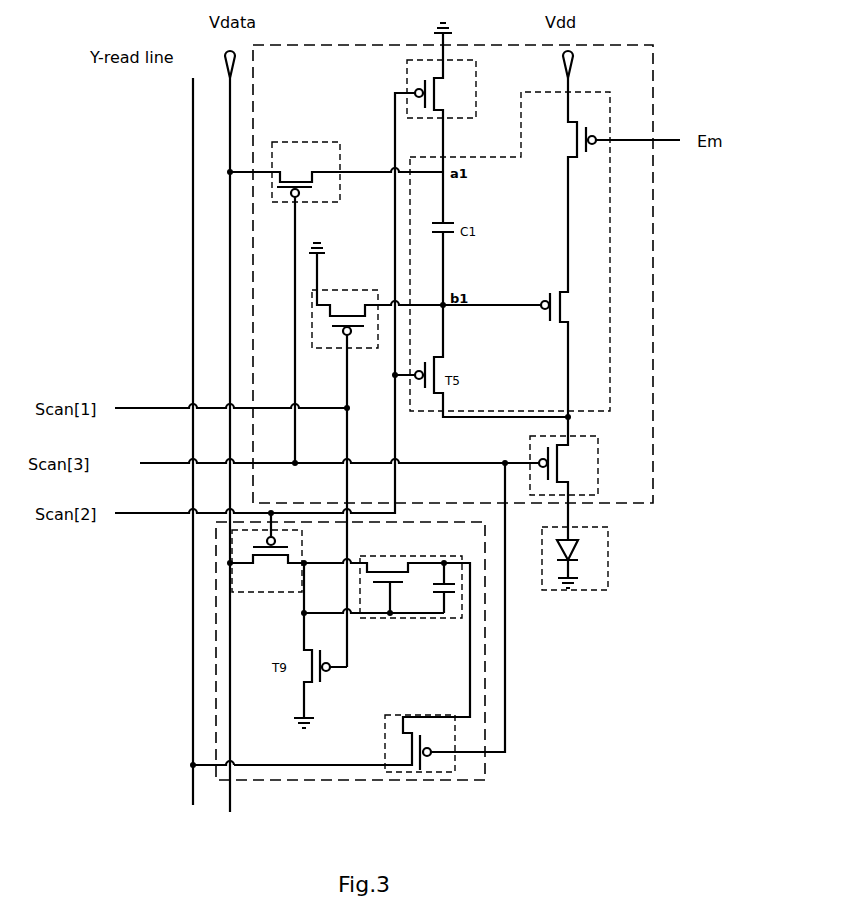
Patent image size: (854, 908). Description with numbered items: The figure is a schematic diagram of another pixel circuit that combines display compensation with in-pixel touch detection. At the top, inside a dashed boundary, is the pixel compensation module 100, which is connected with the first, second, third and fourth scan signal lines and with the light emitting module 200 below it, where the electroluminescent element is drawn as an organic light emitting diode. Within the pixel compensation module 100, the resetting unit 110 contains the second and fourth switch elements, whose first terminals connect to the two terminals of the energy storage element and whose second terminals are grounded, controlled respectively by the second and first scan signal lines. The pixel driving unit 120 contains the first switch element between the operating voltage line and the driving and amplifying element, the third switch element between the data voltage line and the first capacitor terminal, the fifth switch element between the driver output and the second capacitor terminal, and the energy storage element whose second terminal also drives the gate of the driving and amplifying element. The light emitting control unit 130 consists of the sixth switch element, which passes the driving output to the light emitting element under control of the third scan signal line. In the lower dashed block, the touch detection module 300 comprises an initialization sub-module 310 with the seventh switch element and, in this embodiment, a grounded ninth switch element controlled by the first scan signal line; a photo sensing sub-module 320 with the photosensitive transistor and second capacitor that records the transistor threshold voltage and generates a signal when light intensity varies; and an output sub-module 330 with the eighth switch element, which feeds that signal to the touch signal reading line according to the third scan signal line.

The pixel compensation module 100 is at (632, 60).
The resetting unit 110 is at (418, 67).
The pixel driving unit 120 is at (330, 150).
The light emitting control unit 130 is at (530, 448).
The light emitting module 200 is at (600, 580).
The touch detection module 300 is at (453, 668).
The initialization sub-module 310 is at (280, 583).
The photo sensing sub-module 320 is at (450, 622).
The output sub-module 330 is at (432, 764).